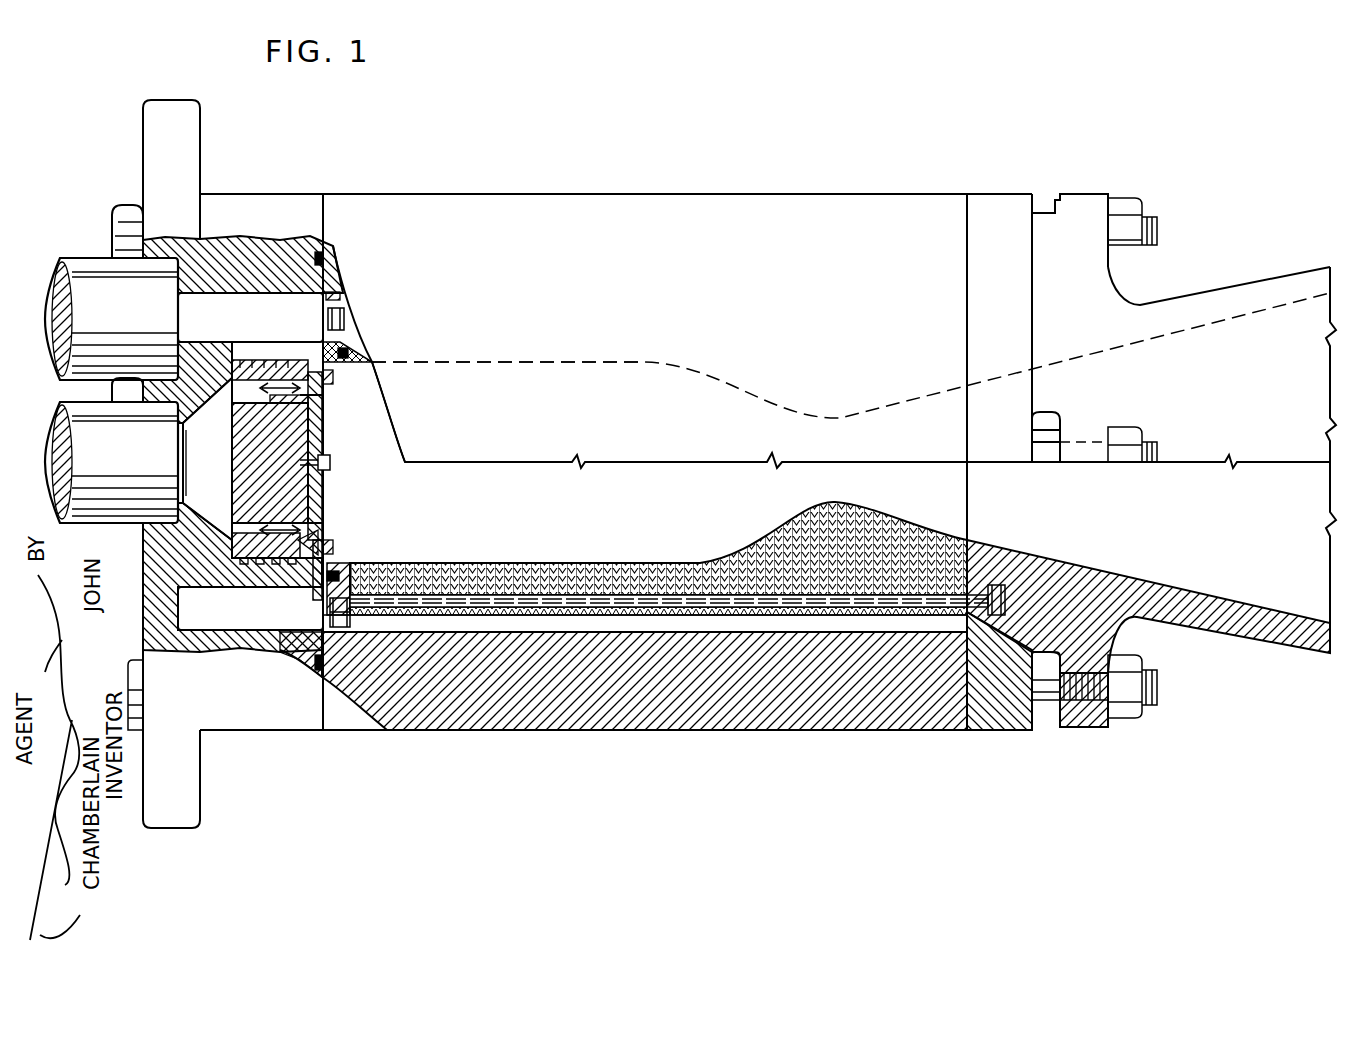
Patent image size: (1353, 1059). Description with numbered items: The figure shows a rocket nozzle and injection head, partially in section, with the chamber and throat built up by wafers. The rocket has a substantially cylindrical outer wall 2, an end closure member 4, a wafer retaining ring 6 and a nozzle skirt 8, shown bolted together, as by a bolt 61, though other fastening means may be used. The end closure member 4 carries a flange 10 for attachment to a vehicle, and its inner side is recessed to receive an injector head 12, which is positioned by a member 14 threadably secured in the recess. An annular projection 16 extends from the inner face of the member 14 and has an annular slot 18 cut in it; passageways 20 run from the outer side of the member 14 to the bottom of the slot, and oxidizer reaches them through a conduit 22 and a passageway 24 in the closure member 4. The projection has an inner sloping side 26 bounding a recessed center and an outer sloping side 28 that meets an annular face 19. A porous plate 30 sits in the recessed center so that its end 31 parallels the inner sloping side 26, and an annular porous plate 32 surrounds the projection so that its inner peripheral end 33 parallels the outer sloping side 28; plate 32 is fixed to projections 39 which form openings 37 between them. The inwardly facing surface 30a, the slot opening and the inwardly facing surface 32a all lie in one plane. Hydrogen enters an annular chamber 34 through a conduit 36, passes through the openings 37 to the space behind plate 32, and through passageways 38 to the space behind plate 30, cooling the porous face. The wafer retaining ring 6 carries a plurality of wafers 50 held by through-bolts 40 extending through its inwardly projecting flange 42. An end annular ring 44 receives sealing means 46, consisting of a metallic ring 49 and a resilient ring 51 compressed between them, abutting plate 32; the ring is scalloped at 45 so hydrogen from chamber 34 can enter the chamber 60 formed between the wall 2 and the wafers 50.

The cylindrical outer wall 2 is at (565, 212).
The end closure member 4 is at (260, 722).
The wafer retaining ring 6 is at (1003, 718).
The nozzle skirt 8 is at (1272, 630).
The flange 10 is at (150, 112).
The injector head 12 is at (224, 435).
The member 14 is at (315, 443).
The annular projection 16 is at (280, 382).
The annular slot 18 is at (325, 524).
The annular face 19 is at (300, 548).
The passageways 20 is at (240, 404).
The conduit 22 is at (120, 453).
The passageway 24 is at (203, 500).
The inner sloping side 26 is at (322, 418).
The outer sloping side 28 is at (333, 390).
The porous plate 30 is at (328, 475).
The inwardly facing surface 30a is at (380, 440).
The end of plate 31 is at (325, 403).
The annular porous plate 32 is at (322, 556).
The inwardly facing surface 32a is at (385, 363).
The inner peripheral end 33 is at (333, 377).
The annular chamber 34 is at (210, 331).
The conduit 36 is at (120, 309).
The openings 37 is at (300, 590).
The passageways 38 is at (240, 449).
The projections 39 is at (300, 360).
The through-bolts 40 is at (570, 598).
The inwardly projecting flange 42 is at (983, 577).
The end annular ring 44 is at (342, 574).
The scalloped periphery 45 is at (326, 295).
The sealing means 46 is at (350, 343).
The metallic ring 49 is at (326, 318).
The wafers 50 is at (655, 562).
The resilient ring 51 is at (365, 351).
The chamber 60 is at (680, 632).
The bolt 61 is at (1092, 725).